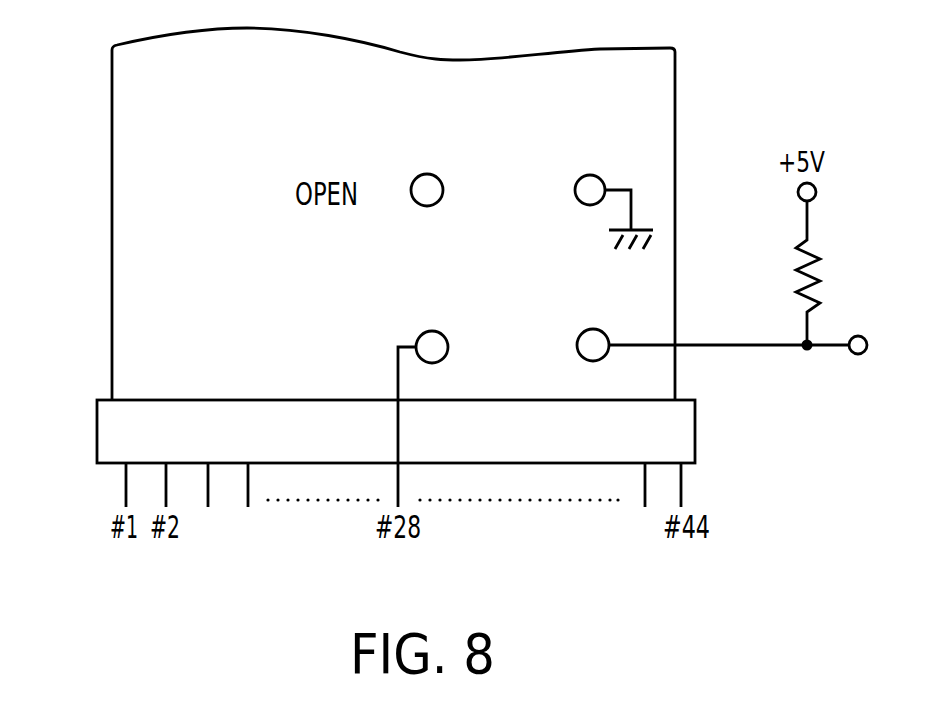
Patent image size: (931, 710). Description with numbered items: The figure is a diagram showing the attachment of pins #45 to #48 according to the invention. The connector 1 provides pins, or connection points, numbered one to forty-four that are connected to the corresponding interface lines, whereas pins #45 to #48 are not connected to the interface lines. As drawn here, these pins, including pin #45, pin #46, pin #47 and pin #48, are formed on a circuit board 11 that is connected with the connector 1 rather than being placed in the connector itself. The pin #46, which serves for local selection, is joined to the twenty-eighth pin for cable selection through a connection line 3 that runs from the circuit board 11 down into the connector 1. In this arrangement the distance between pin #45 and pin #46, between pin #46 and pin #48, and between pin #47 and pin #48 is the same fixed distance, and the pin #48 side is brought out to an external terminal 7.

The connector 1 is at (97, 432).
The connection line 3 is at (398, 361).
The output terminal 7 is at (862, 336).
The circuit board 11 is at (676, 92).
The pin # 45 is at (423, 169).
The pin # 46 is at (433, 326).
The pin # 47 is at (606, 190).
The pin # 48 is at (708, 325).